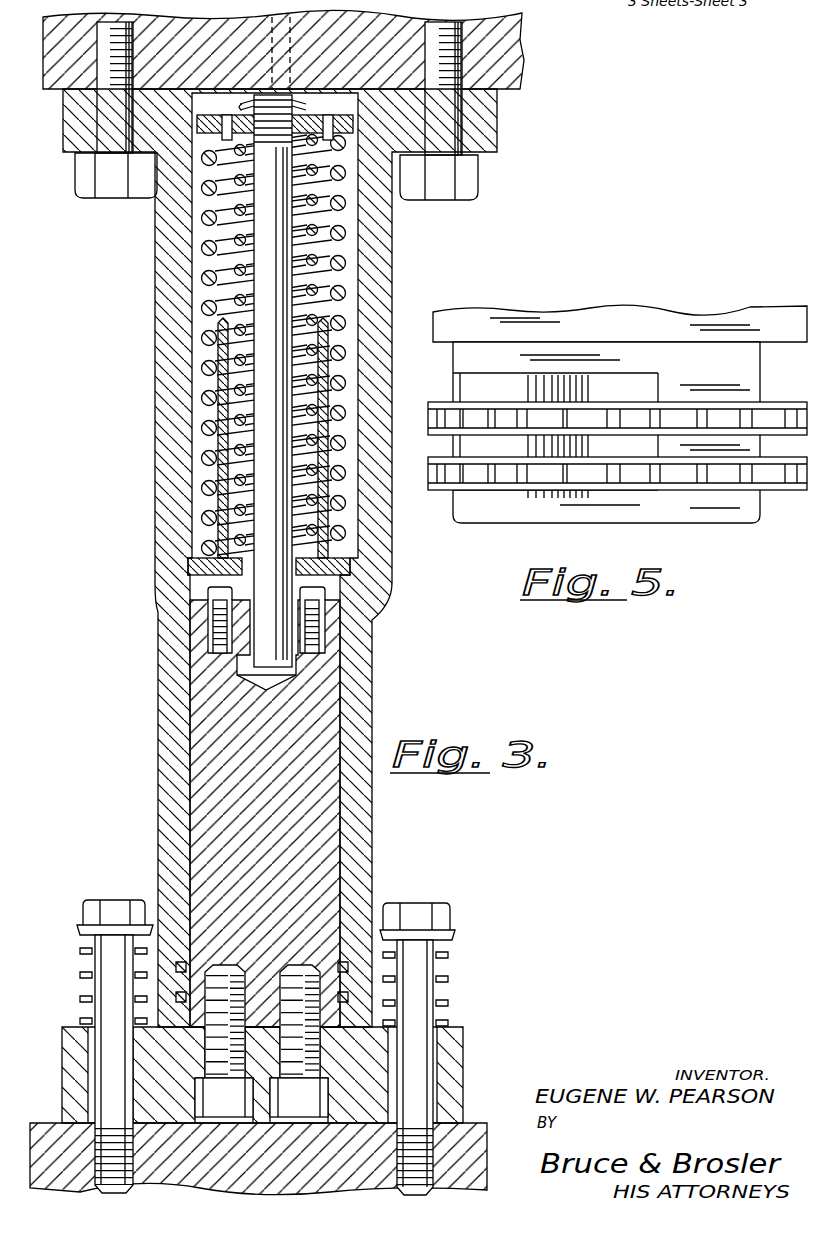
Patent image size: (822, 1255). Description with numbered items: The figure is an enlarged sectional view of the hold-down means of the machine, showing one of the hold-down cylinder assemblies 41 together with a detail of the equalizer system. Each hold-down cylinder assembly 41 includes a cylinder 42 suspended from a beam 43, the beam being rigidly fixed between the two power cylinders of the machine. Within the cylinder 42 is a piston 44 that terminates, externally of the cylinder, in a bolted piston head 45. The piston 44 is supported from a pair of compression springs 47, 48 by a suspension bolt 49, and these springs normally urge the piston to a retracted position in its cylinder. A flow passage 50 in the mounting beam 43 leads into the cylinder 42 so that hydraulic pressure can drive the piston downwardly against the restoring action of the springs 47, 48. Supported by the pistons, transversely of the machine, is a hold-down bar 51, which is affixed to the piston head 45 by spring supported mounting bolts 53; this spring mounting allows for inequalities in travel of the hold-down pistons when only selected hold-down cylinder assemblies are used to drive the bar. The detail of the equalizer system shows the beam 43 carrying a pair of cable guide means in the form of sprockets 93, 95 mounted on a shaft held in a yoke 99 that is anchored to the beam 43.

In FIG. 3, the hold-down cylinder assembly 41 is at (280, 558).
In FIG. 3, the cylinder 42 is at (376, 630).
In FIG. 3, the beam 43 is at (512, 98).
In FIG. 5, the beam 43 is at (592, 322).
In FIG. 3, the piston 44 is at (205, 727).
In FIG. 3, the piston head 45 is at (462, 1053).
In FIG. 3, the compression spring 47 is at (209, 308).
In FIG. 3, the compression spring 48 is at (312, 288).
In FIG. 3, the suspension bolt 49 is at (265, 405).
In FIG. 3, the flow passage 50 is at (308, 96).
In FIG. 3, the hold-down bar 51 is at (48, 1120).
In FIG. 3, the mounting bolt 53 is at (107, 977).
In FIG. 5, the sprocket 93 is at (510, 420).
In FIG. 5, the sprocket 95 is at (505, 472).
In FIG. 5, the yoke 99 is at (543, 515).